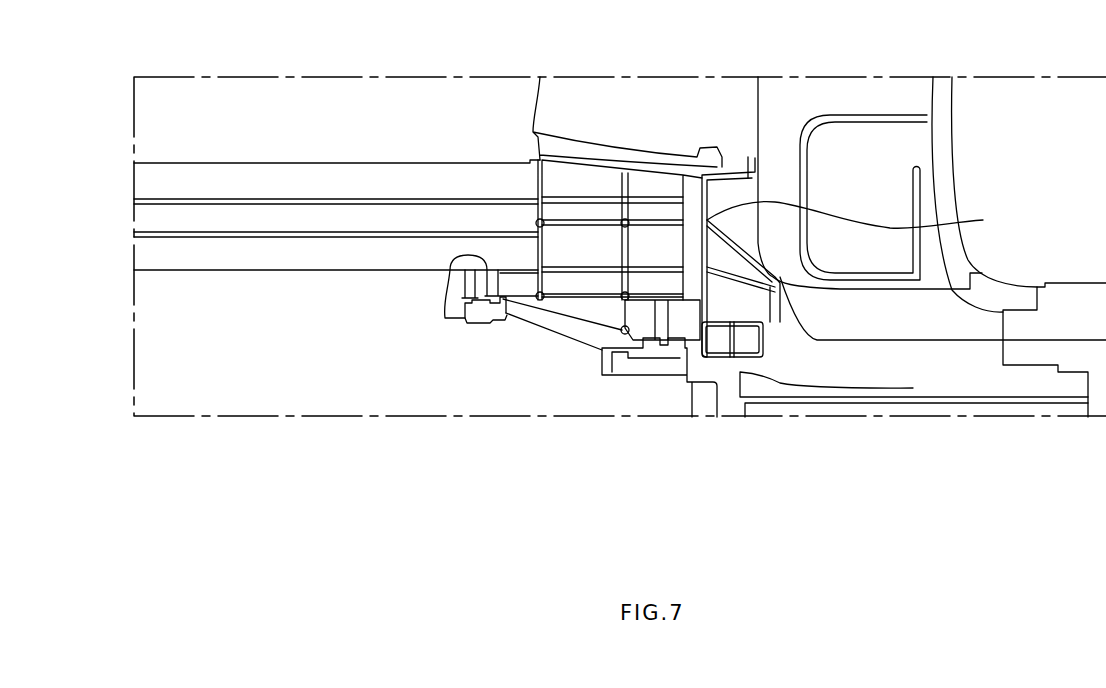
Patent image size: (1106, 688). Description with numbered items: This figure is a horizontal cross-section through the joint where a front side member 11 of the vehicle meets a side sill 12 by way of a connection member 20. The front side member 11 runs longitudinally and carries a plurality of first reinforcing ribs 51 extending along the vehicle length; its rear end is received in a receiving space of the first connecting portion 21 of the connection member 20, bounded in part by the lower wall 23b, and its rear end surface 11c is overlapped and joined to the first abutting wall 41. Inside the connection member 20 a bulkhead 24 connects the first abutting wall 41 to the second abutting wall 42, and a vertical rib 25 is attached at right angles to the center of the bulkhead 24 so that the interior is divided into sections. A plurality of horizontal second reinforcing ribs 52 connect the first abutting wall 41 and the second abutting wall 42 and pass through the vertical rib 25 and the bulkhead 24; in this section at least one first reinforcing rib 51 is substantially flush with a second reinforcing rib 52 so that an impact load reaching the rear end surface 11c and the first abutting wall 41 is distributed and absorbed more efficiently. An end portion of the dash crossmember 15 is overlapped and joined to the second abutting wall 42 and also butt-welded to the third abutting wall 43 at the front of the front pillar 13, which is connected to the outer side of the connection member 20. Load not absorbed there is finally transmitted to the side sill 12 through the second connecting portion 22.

The front side member 11 is at (205, 271).
The rear end surface 11c is at (548, 255).
The side sill 12 is at (1071, 292).
The front pillar 13 is at (936, 135).
The dash crossmember 15 is at (727, 175).
The connection member 20 is at (640, 383).
The first connecting portion 21 is at (478, 330).
The second connecting portion 22 is at (921, 420).
The lower wall 23b is at (444, 305).
The bulkhead 24 is at (565, 175).
The vertical rib 25 is at (640, 240).
The first abutting wall 41 is at (537, 188).
The second abutting wall 42 is at (858, 216).
The third abutting wall 43 is at (753, 158).
The first reinforcing rib 51 is at (333, 199).
The second reinforcing rib 52 is at (590, 177).